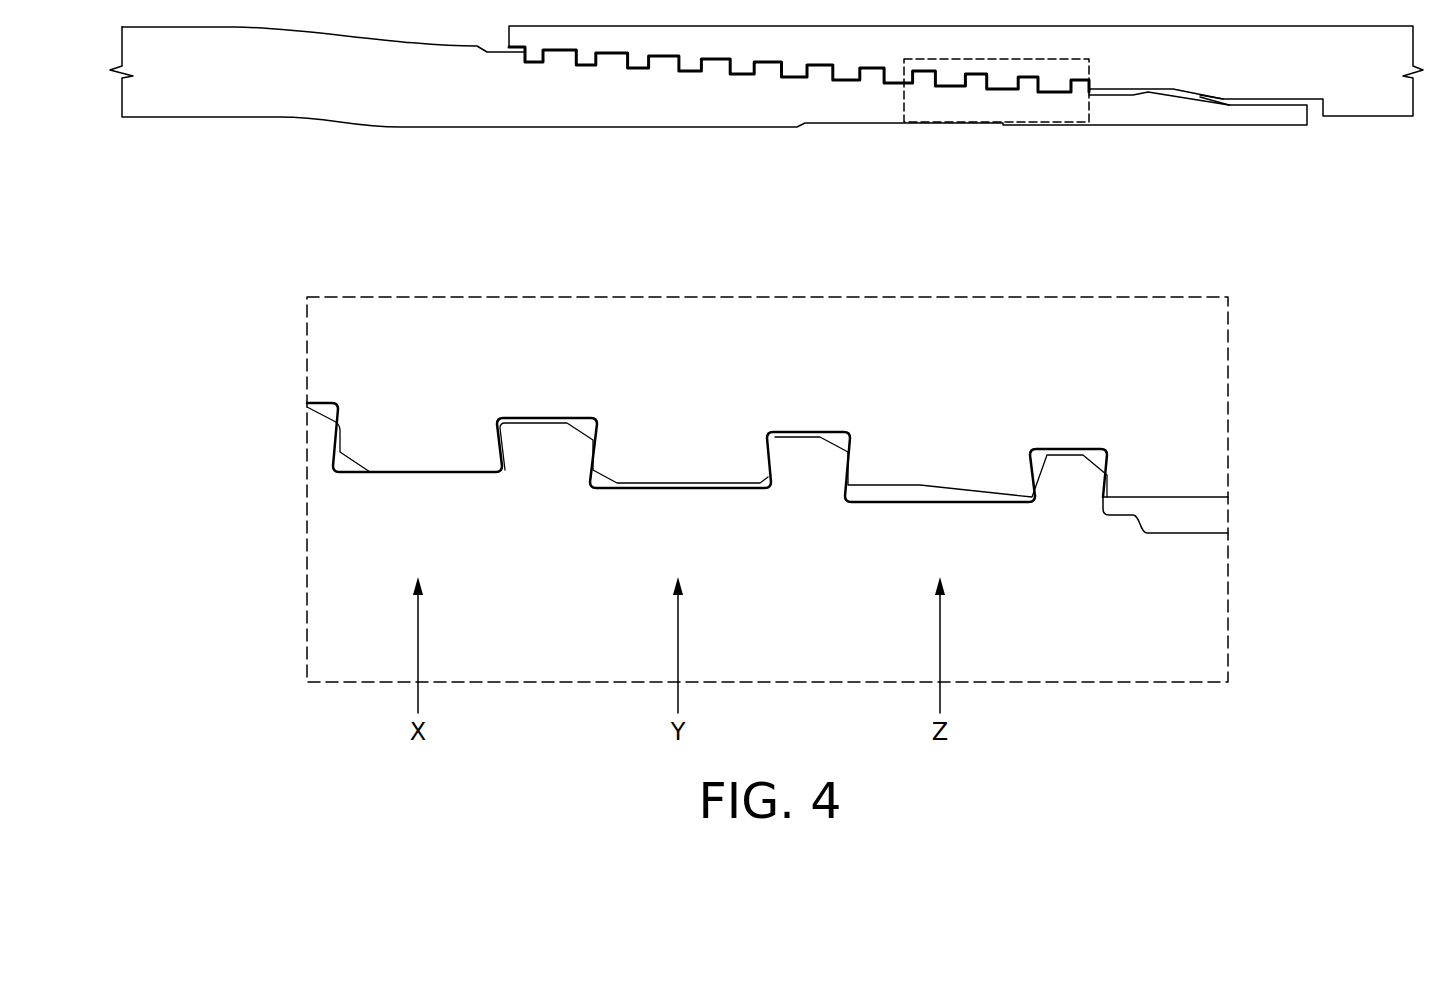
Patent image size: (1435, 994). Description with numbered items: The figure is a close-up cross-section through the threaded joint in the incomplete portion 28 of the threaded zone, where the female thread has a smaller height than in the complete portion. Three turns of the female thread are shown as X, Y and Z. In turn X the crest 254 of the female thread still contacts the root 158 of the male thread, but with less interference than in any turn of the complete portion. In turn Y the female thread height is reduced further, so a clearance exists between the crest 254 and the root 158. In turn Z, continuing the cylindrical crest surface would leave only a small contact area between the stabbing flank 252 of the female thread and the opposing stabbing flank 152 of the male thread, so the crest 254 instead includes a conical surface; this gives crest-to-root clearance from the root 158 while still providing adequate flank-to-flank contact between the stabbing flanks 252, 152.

The incomplete portion 28 is at (283, 699).
The stabbing flank of the male thread 152 is at (1030, 497).
The root of the male thread 158 is at (407, 472).
The stabbing flank 252 is at (1037, 470).
The crest of the female thread 254 is at (440, 475).